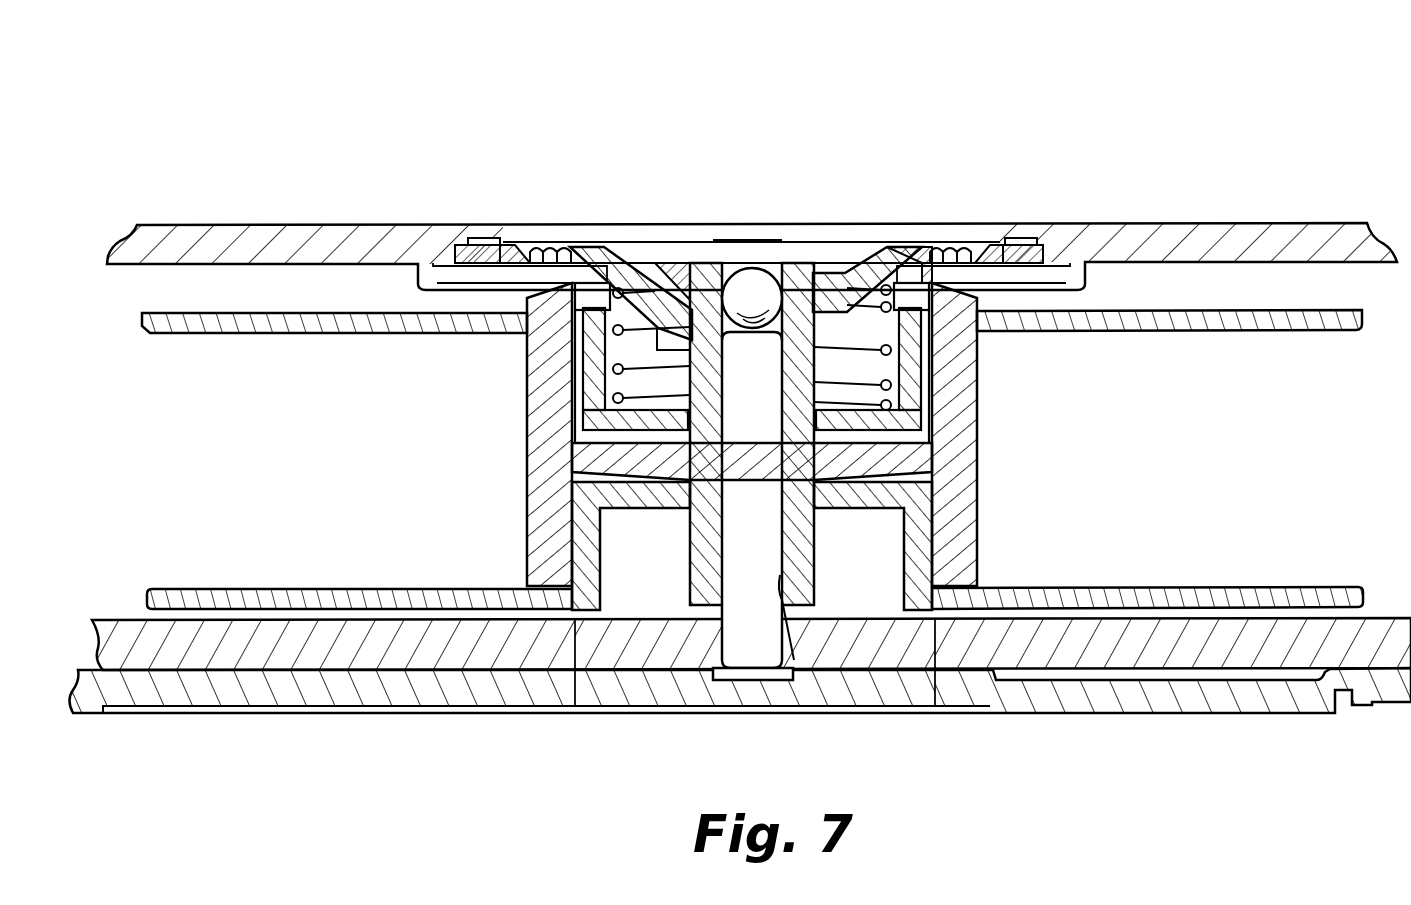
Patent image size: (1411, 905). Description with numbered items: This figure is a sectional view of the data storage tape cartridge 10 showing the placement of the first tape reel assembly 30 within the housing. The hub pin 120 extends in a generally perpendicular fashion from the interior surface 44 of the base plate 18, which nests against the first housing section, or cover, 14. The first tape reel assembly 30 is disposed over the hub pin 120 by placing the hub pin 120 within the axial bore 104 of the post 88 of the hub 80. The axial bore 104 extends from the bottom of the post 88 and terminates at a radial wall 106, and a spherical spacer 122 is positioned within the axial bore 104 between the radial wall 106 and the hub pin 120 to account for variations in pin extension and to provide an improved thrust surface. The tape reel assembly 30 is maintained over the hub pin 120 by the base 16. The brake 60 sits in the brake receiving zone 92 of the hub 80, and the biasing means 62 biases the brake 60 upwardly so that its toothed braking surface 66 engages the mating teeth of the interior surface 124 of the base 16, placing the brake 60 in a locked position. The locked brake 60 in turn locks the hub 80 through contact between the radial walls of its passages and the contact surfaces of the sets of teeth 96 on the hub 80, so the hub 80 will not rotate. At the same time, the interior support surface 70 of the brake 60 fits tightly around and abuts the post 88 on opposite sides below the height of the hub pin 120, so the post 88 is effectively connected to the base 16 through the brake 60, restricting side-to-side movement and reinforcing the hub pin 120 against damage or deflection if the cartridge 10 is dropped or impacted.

The data storage tape cartridge 10 is at (1228, 100).
The first housing section 14 is at (477, 708).
The base 16 is at (177, 226).
The base plate 18 is at (629, 658).
The first tape reel assembly 30 is at (733, 245).
The interior surface 44 is at (1036, 620).
The brake 60 is at (892, 252).
The biasing means 62 is at (893, 352).
The braking surface 66 is at (478, 246).
The interior support surface 70 is at (661, 276).
The hub 80 is at (526, 439).
The post 88 is at (766, 262).
The brake receiving zone 92 is at (610, 349).
The sets of teeth 96 is at (542, 250).
The axial bore 104 is at (784, 602).
The radial wall 106 is at (704, 270).
The hub pin 120 is at (753, 657).
The spherical spacer 122 is at (748, 290).
The interior surface 124 is at (489, 240).